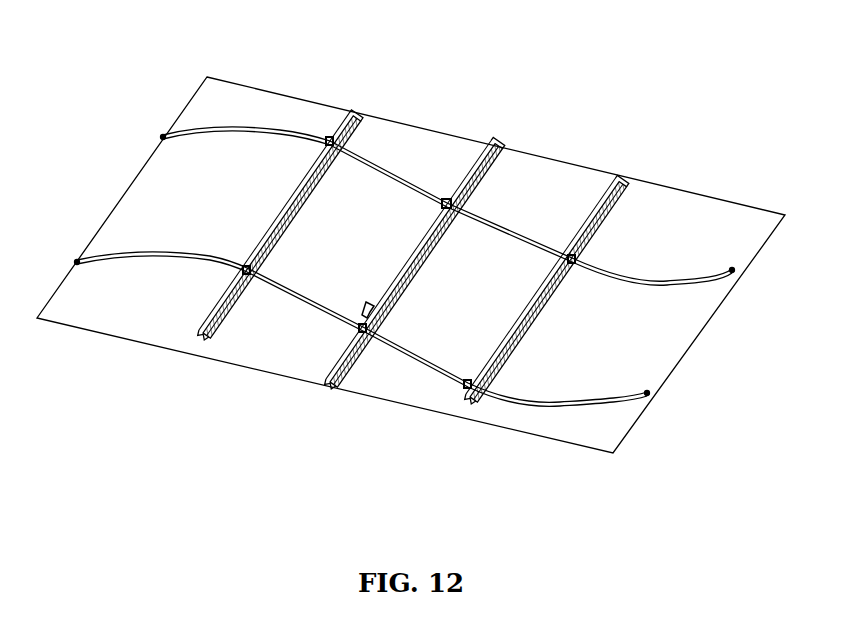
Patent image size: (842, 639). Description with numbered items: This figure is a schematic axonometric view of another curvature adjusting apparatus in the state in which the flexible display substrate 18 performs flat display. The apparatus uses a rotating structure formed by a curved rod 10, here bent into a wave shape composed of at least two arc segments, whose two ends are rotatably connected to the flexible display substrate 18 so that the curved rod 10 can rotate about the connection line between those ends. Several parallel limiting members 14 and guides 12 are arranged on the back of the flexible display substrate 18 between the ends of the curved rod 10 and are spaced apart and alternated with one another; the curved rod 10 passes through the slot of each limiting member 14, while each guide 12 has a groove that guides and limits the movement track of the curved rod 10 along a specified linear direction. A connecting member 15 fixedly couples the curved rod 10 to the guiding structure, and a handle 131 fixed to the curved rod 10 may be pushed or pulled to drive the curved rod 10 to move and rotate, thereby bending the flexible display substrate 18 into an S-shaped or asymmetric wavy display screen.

The curved rod 10 is at (248, 128).
The guide 12 is at (487, 140).
The limiting member 14 is at (343, 110).
The connecting member 15 is at (447, 207).
The flexible display substrate 18 is at (693, 203).
The handle 131 is at (372, 318).